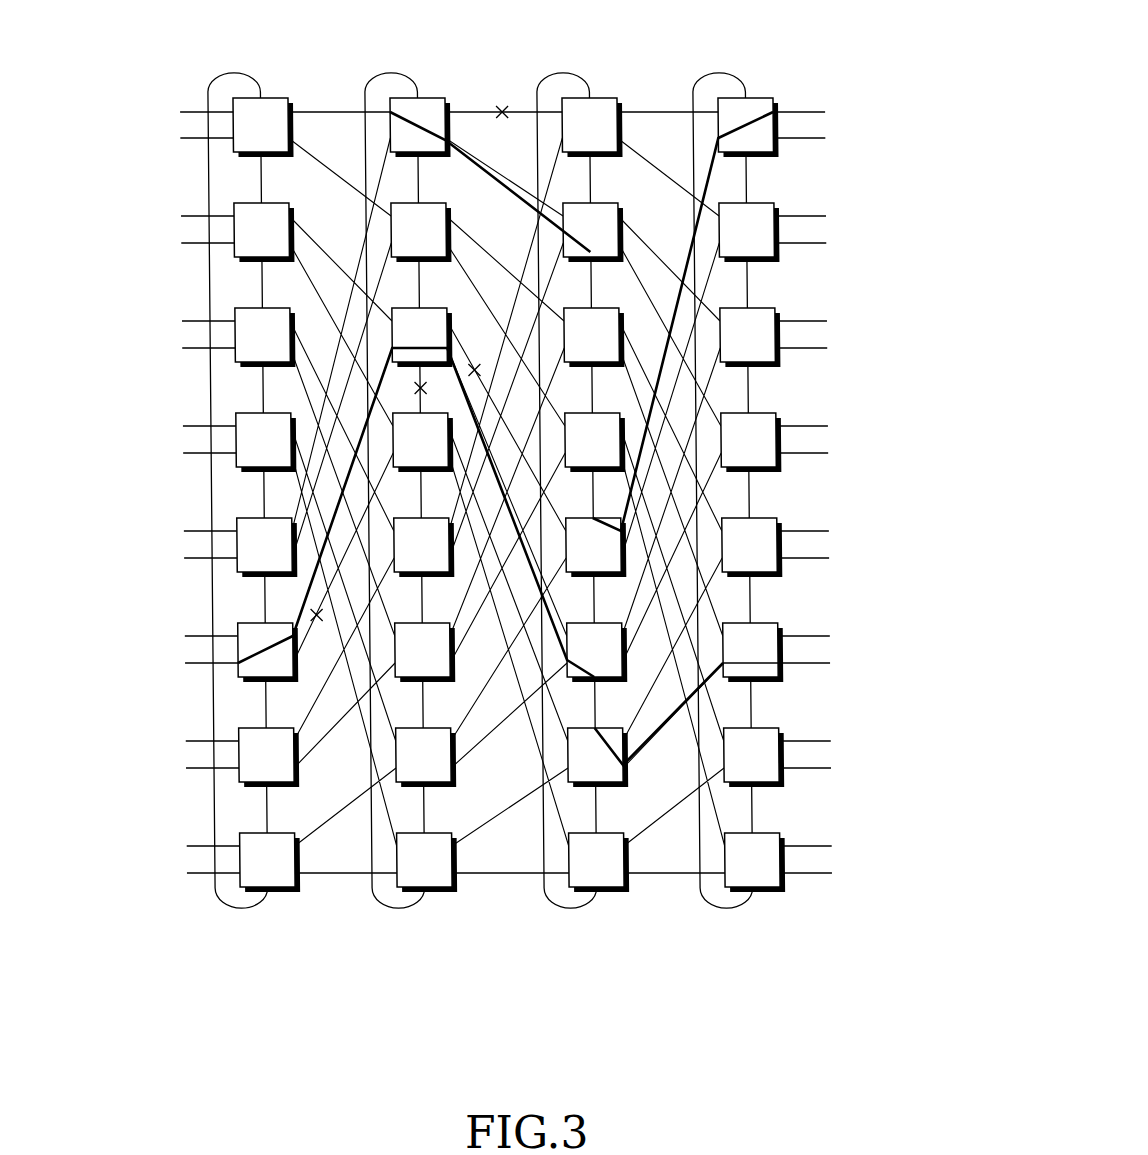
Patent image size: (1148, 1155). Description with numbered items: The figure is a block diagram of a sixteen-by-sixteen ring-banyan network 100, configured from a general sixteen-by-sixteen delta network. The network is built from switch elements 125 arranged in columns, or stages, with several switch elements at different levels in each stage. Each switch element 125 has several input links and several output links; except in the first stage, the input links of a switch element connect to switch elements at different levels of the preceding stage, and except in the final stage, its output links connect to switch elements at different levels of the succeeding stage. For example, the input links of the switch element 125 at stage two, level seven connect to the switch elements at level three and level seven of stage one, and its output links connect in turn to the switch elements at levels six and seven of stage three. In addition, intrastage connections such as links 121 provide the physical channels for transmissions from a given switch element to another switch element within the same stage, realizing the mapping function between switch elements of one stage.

The ring-banyan network 100 is at (511, 556).
The links 121 is at (442, 294).
The switch element 125 is at (447, 537).